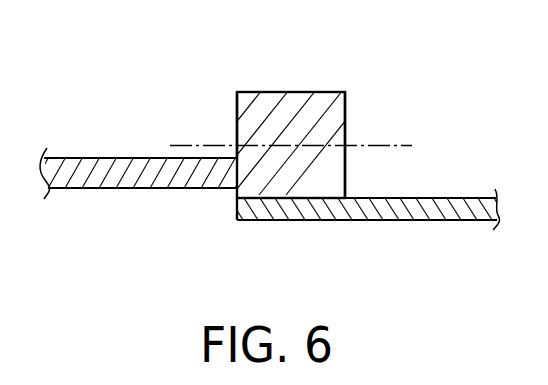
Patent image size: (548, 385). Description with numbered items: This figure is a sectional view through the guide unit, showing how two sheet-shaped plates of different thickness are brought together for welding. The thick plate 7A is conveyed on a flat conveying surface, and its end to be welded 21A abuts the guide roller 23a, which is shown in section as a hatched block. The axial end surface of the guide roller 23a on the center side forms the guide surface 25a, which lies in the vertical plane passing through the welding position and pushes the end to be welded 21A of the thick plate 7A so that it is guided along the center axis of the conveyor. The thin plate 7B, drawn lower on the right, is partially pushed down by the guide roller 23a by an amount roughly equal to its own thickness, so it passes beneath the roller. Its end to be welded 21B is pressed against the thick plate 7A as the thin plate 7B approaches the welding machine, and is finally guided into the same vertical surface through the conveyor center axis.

The thick plate 7A is at (82, 156).
The thin plate 7B is at (458, 196).
The end to be welded 21A is at (238, 178).
The end to be welded 21B is at (236, 208).
The guide roller 23a is at (357, 119).
The guide surface 25a is at (237, 117).